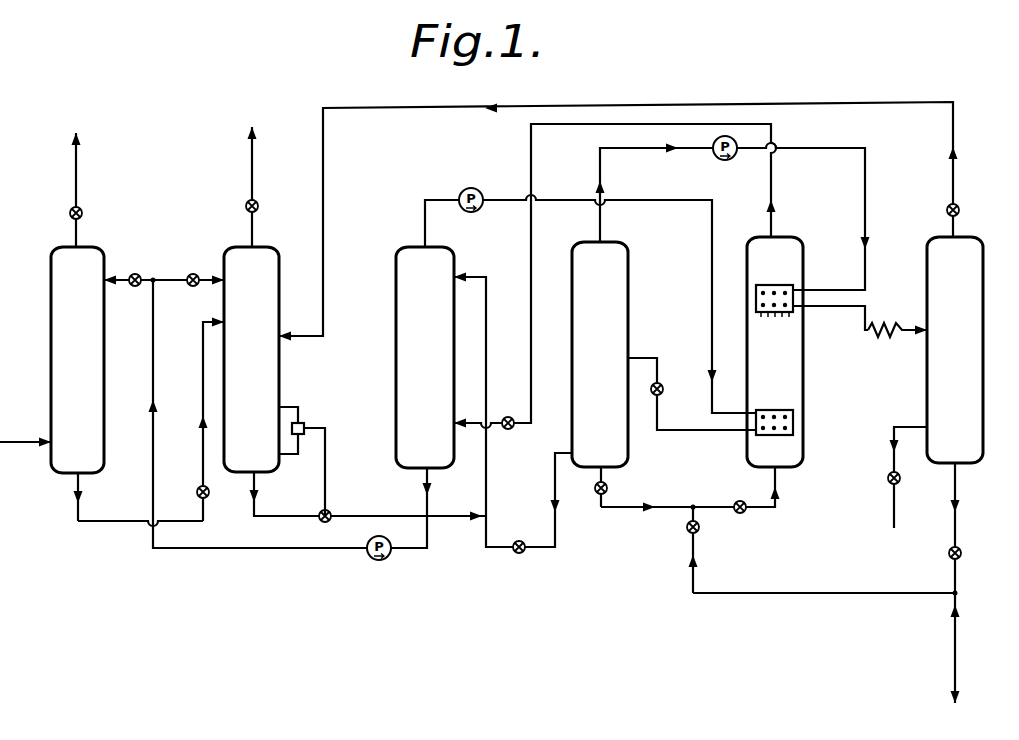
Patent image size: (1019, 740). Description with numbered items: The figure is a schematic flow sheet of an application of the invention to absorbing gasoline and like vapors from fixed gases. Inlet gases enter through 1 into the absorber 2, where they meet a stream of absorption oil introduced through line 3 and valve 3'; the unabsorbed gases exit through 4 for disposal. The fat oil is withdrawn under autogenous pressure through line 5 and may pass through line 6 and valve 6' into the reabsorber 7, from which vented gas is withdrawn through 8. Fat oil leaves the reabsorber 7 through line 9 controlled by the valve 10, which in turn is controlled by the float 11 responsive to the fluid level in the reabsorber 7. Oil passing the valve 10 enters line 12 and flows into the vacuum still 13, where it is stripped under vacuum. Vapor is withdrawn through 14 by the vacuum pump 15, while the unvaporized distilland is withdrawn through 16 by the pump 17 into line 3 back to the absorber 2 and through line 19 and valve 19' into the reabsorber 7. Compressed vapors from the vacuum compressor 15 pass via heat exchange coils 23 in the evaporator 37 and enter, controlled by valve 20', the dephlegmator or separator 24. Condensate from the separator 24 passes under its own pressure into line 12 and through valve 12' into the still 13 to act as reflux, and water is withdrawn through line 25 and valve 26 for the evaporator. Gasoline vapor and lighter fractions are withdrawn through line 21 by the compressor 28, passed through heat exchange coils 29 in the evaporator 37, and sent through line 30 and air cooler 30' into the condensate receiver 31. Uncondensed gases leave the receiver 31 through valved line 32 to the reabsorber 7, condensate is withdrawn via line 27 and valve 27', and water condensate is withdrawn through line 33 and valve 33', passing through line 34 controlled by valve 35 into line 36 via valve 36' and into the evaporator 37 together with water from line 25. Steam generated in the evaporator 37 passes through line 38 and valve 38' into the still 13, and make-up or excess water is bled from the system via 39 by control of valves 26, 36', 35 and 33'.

The inlet 1 is at (24, 437).
The absorber 2 is at (84, 295).
The line 3 is at (164, 265).
The valve 3' is at (144, 264).
The outlet 4 is at (82, 213).
The line 5 is at (83, 488).
The line 6 is at (140, 511).
The valve 6' is at (194, 420).
The reabsorber 7 is at (260, 300).
The outlet 8 is at (259, 206).
The line 9 is at (283, 514).
The valve 10 is at (329, 513).
The float 11 is at (304, 422).
The line 12 is at (513, 410).
The valve 12' is at (517, 533).
The vacuum still 13 is at (438, 292).
The line 14 is at (425, 222).
The vacuum pump 15 is at (463, 190).
The line 16 is at (433, 536).
The pump 17 is at (368, 557).
The line 19 is at (258, 414).
The valve 19' is at (192, 262).
The valve 20' is at (672, 378).
The line 21 is at (601, 167).
The heat exchange coils 23 is at (792, 410).
The dephlegmator 24 is at (611, 287).
The line 25 is at (603, 477).
The valve 26 is at (601, 497).
The line 27 is at (884, 477).
The valve 27' is at (859, 485).
The compressor 28 is at (709, 145).
The heat exchange coils 29 is at (789, 285).
The line 30 is at (847, 311).
The air cooler 30' is at (884, 348).
The condensate receiver 31 is at (965, 280).
The valved line 32 is at (327, 138).
The line 33 is at (974, 529).
The valve 33' is at (922, 558).
The line 34 is at (834, 593).
The valve 35 is at (698, 529).
The line 36 is at (705, 496).
The valve 36' is at (725, 493).
The evaporator 37 is at (786, 274).
The line 38 is at (611, 276).
The valve 38' is at (499, 408).
The bleed outlet 39 is at (953, 646).